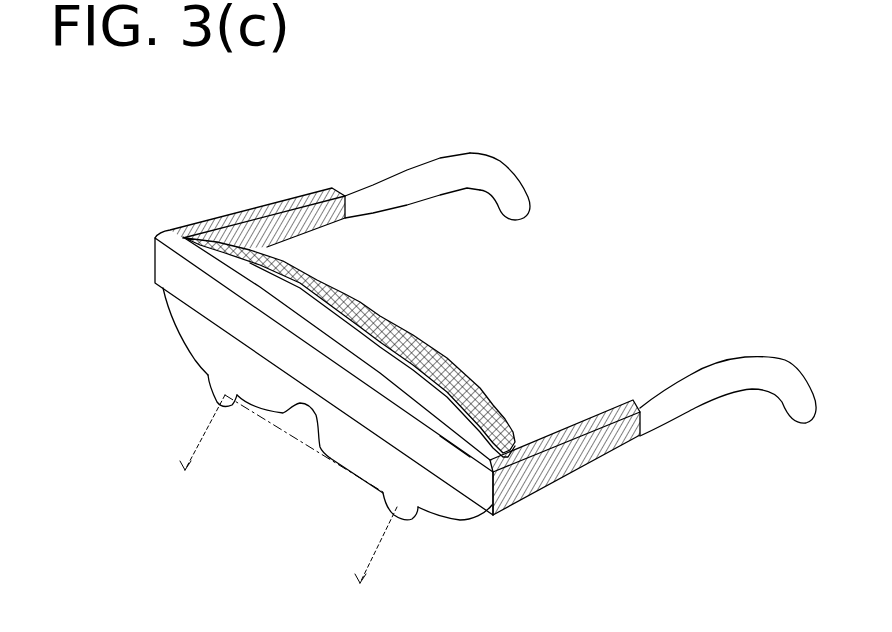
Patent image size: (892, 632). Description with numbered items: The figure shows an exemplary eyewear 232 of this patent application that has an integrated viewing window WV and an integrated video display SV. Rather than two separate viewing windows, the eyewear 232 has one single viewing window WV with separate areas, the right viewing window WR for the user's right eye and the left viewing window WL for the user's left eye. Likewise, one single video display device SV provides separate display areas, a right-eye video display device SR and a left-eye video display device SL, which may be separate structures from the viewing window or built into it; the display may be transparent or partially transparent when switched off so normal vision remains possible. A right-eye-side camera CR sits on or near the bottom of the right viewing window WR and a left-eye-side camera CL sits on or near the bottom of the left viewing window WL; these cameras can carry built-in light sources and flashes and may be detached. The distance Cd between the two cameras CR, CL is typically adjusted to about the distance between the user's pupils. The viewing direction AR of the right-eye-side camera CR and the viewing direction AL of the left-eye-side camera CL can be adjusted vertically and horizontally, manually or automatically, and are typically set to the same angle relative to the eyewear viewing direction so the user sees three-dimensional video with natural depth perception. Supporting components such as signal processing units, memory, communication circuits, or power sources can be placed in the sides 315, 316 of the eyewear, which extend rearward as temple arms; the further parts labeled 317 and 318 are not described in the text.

The side of the eyewear 316 is at (267, 228).
The eyewear 232 is at (380, 190).
The temple tip 318 is at (503, 186).
The left temple 317 is at (790, 385).
The side of the eyewear 315 is at (560, 460).
The right viewing window WR is at (183, 313).
The right-eye video display device SR is at (225, 309).
The right-eye-side camera CR is at (208, 390).
The viewing direction of the right-eye-side camera AR is at (195, 453).
The distance between two cameras Cd is at (304, 444).
The left-eye video display device SL is at (422, 445).
The left-eye-side camera CL is at (381, 513).
The viewing direction of the left-eye-side camera AL is at (366, 562).
The left viewing window WL is at (427, 490).
The single viewing window WV is at (357, 322).
The single video display device SV is at (450, 457).